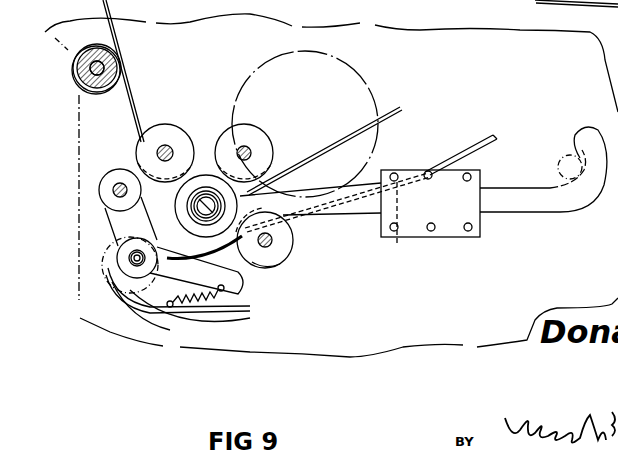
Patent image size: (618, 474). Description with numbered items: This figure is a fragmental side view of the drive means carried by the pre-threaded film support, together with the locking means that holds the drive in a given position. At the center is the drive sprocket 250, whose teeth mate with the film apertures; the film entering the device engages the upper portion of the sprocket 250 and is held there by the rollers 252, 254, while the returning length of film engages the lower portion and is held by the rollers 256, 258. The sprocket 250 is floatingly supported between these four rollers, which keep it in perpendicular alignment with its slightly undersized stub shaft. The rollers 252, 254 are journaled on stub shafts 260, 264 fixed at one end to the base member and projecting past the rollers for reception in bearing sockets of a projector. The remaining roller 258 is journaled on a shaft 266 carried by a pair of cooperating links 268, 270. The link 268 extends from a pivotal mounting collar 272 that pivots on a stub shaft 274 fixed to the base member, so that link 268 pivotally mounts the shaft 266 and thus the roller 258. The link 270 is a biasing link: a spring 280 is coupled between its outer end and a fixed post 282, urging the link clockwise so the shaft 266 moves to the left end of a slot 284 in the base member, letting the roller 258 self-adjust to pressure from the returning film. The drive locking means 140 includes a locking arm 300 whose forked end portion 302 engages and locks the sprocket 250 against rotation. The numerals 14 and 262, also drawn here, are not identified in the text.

The frame 14 is at (351, 128).
The drive locking means 140 is at (426, 165).
The drive sprocket 250 is at (205, 160).
The roller 252 is at (256, 125).
The roller 254 is at (165, 126).
The roller 256 is at (284, 266).
The roller 258 is at (136, 298).
The stub shaft 260 is at (246, 152).
The hub 262 is at (167, 151).
The stub shaft 264 is at (272, 241).
The shaft 266 is at (133, 262).
The link 268 is at (118, 240).
The link 270 is at (157, 285).
The pivotal mounting collar 272 is at (100, 195).
The stub shaft 274 is at (119, 189).
The spring 280 is at (216, 270).
The fixed post 282 is at (215, 310).
The slot 284 is at (195, 293).
The locking arm 300 is at (527, 210).
The end portion 302 is at (355, 181).